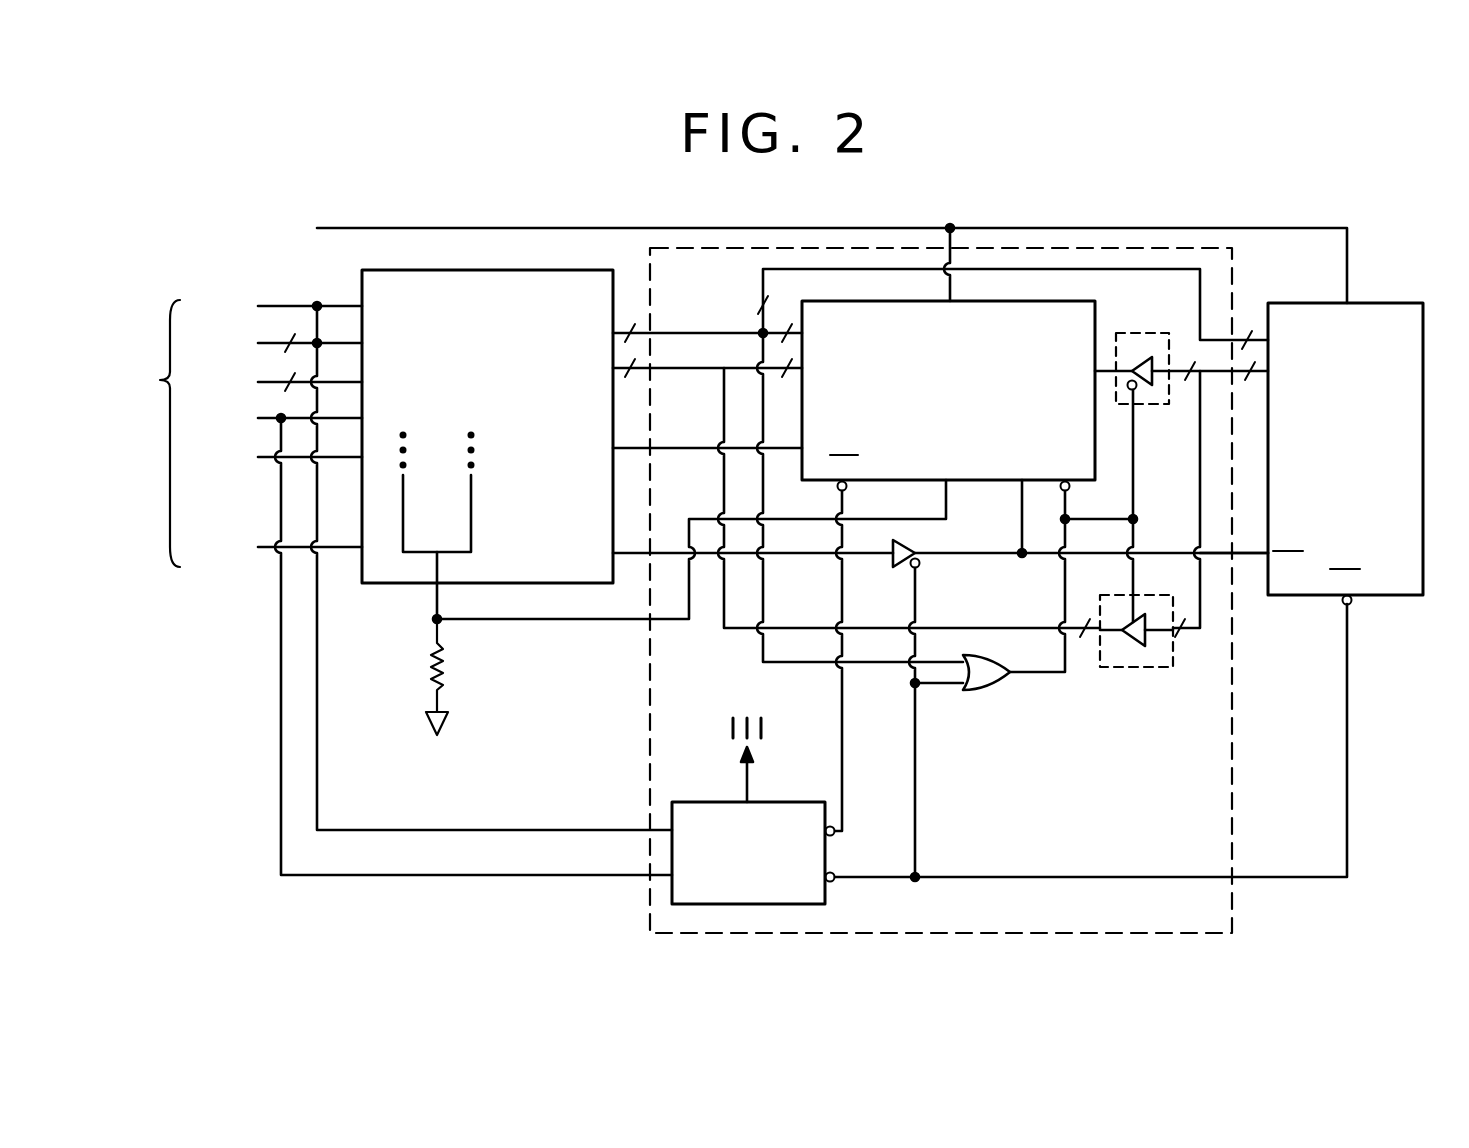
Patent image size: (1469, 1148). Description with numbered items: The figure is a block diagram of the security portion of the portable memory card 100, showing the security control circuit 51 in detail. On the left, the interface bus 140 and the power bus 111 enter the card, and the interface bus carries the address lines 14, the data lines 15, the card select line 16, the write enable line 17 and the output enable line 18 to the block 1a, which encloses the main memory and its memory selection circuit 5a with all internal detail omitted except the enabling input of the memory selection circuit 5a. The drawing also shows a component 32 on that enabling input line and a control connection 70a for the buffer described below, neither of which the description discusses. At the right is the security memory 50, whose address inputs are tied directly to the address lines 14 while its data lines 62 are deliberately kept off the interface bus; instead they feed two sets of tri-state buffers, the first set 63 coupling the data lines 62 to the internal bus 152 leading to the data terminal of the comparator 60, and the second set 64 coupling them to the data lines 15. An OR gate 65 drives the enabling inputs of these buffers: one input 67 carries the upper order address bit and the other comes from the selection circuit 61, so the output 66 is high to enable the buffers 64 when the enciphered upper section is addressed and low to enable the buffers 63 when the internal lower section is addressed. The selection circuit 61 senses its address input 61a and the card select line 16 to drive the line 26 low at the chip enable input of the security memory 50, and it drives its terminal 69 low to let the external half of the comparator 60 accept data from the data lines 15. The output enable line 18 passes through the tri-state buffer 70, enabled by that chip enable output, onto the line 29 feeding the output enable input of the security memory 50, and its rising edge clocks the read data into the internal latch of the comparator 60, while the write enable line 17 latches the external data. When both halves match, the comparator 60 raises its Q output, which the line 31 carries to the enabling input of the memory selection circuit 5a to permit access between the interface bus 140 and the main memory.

The portable memory card 100 is at (1228, 219).
The security control circuit 51 is at (857, 246).
The comparator 60 is at (995, 300).
The block 1a is at (458, 270).
The interface bus 140 is at (139, 433).
The power bus 111 is at (260, 306).
The address lines 14 is at (258, 343).
The data lines 15 is at (258, 382).
The card select line 16 is at (258, 418).
The write enable line 17 is at (258, 457).
The output enable line 18 is at (260, 547).
The line 26 is at (850, 878).
The memory selection circuit 5a is at (433, 556).
The resistor 32 is at (430, 670).
The line 31 is at (497, 621).
The address input 61a is at (475, 830).
The selection circuit 61 is at (775, 802).
The input 69 is at (845, 800).
The tri-state buffer 70 is at (920, 548).
The buffer control line 70a is at (960, 556).
The input 67 is at (770, 663).
The OR gate 65 is at (978, 690).
The output 66 is at (1042, 673).
The internal bus 152 is at (1100, 371).
The tri-state buffers 63 is at (1140, 335).
The data lines 62 is at (1215, 373).
The tri-state buffers 64 is at (1131, 668).
The security memory 50 is at (1360, 303).
The line 29 is at (1237, 556).